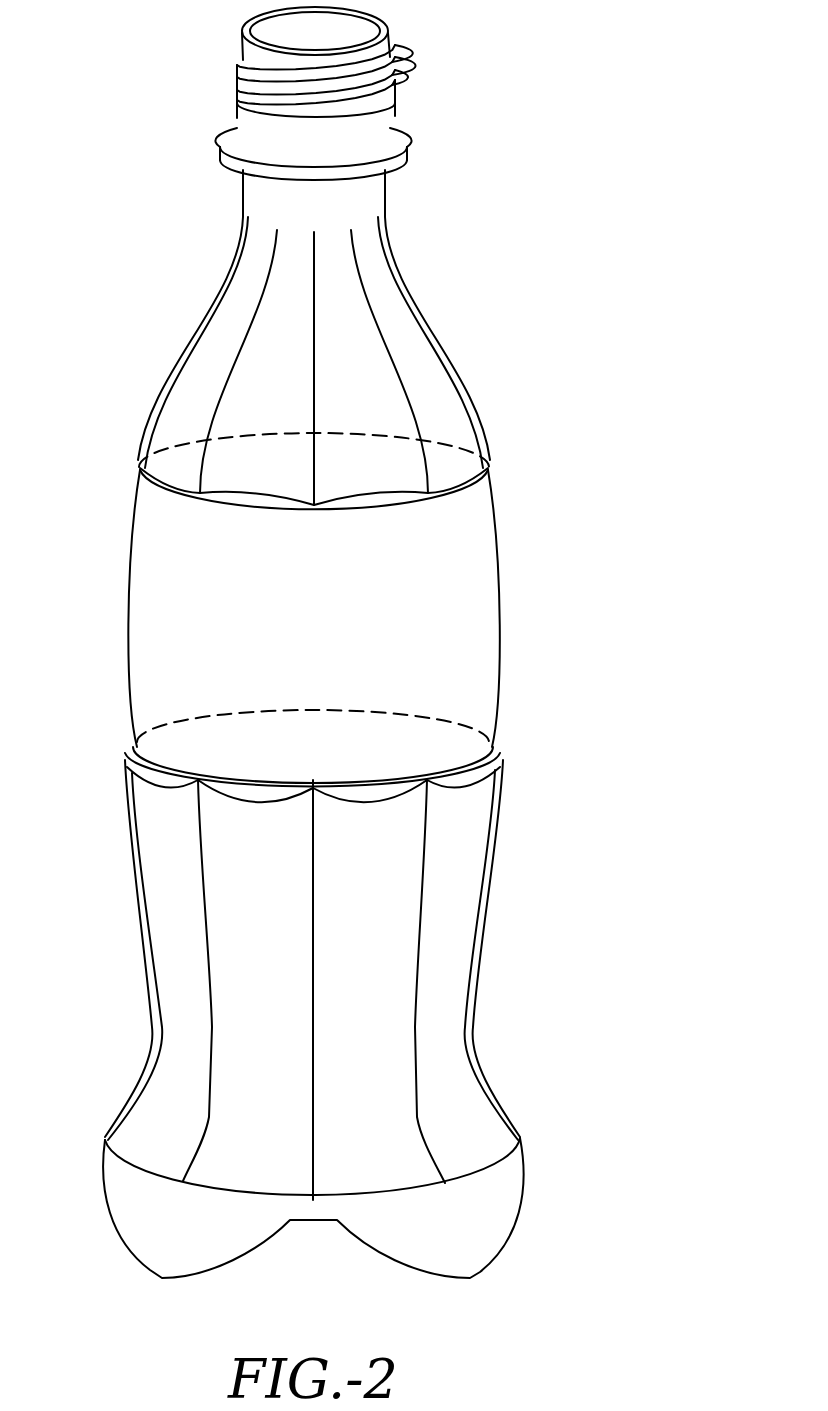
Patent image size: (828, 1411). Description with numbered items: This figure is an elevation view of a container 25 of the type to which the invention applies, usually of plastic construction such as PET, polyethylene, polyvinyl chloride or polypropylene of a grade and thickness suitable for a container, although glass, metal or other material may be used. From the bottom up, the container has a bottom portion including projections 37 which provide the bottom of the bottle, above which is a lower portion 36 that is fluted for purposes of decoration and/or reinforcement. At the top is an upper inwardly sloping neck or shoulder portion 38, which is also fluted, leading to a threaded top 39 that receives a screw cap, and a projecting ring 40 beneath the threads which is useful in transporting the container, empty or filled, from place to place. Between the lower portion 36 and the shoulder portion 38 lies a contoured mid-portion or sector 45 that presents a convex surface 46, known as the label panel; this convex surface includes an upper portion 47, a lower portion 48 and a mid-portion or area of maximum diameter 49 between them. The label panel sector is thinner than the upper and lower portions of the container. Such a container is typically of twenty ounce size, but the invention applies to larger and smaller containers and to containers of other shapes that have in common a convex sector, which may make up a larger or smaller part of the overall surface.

The container 25 is at (545, 603).
The lower portion 36 is at (487, 927).
The projections 37 is at (450, 1280).
The neck or shoulder portion 38 is at (485, 420).
The threaded top 39 is at (387, 33).
The projecting ring 40 is at (400, 140).
The contoured mid-portion or sector 45 is at (129, 623).
The convex surface 46 is at (337, 641).
The upper portion 47 is at (497, 533).
The lower portion 48 is at (497, 723).
The mid-portion or area of maximum diameter 49 is at (498, 638).